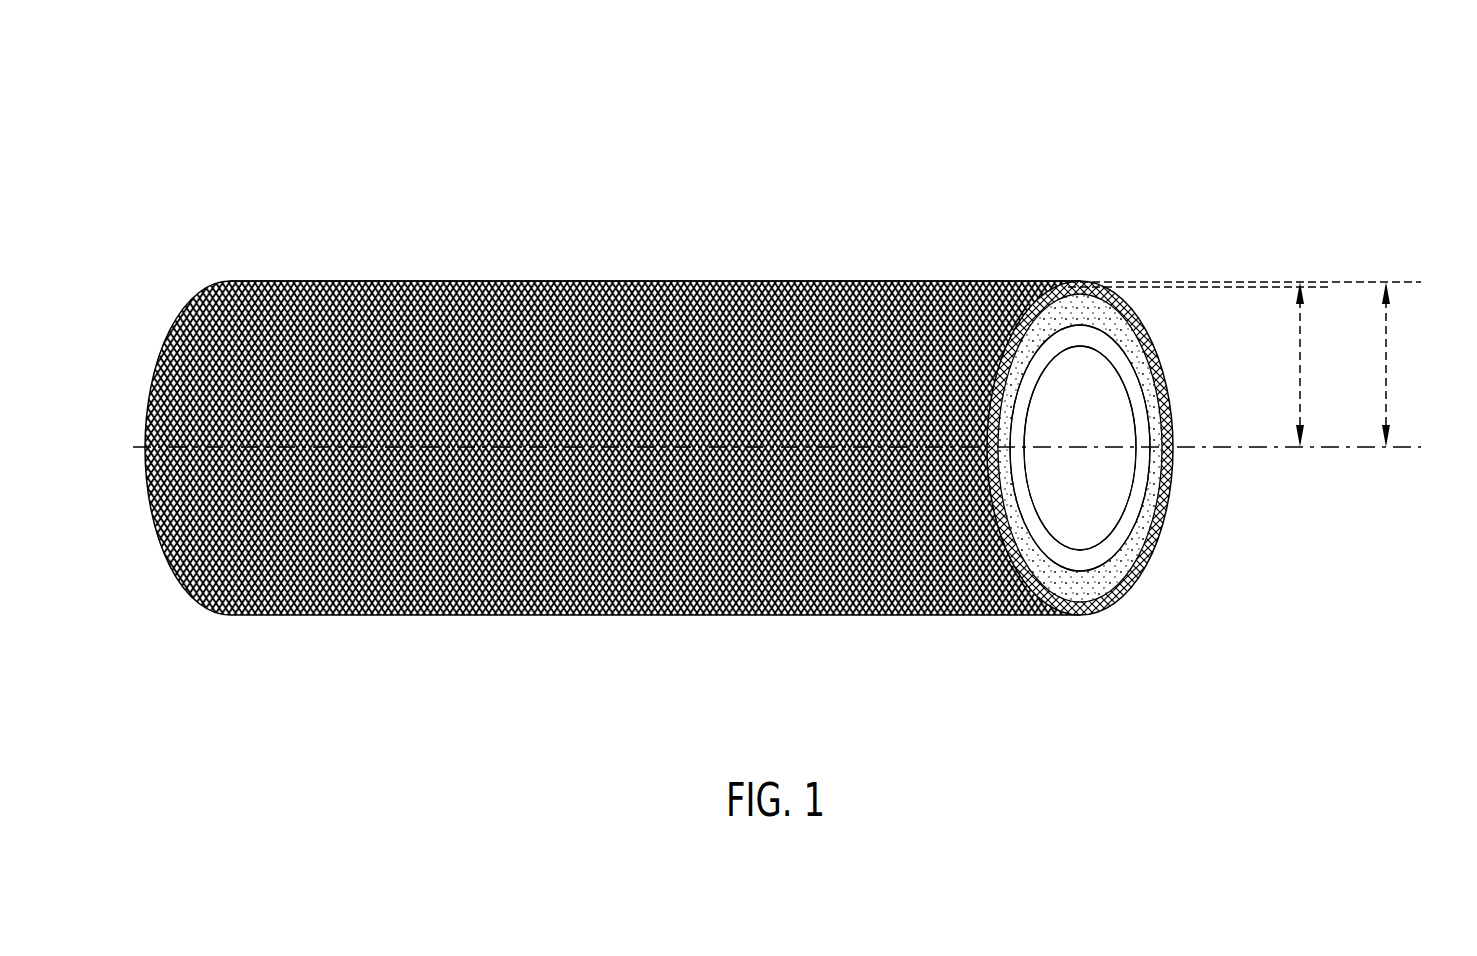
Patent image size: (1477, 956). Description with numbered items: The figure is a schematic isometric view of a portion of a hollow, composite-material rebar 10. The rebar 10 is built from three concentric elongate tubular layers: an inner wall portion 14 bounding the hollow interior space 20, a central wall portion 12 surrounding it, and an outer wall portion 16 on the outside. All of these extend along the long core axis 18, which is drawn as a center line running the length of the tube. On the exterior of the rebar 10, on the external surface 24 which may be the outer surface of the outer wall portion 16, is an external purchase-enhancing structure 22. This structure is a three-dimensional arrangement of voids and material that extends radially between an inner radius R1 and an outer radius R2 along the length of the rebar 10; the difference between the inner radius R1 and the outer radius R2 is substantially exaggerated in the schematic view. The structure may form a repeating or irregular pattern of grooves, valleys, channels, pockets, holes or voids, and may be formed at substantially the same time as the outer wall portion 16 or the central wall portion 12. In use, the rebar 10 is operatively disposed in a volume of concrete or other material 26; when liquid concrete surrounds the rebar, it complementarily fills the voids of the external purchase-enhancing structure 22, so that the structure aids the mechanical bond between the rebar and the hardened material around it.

The rebar 10 is at (792, 336).
The central wall portion 12 is at (1060, 307).
The inner wall portion 14 is at (1000, 325).
The outer wall portion 16 is at (1073, 288).
The long core axis 18 is at (1268, 441).
The hollow interior space 20 is at (1065, 502).
The external purchase-enhancing structure 22 is at (1105, 288).
The external surface 24 is at (820, 278).
The concrete or other material 26 is at (850, 138).
The inner radius R1 is at (1290, 357).
The outer radius R2 is at (1380, 353).